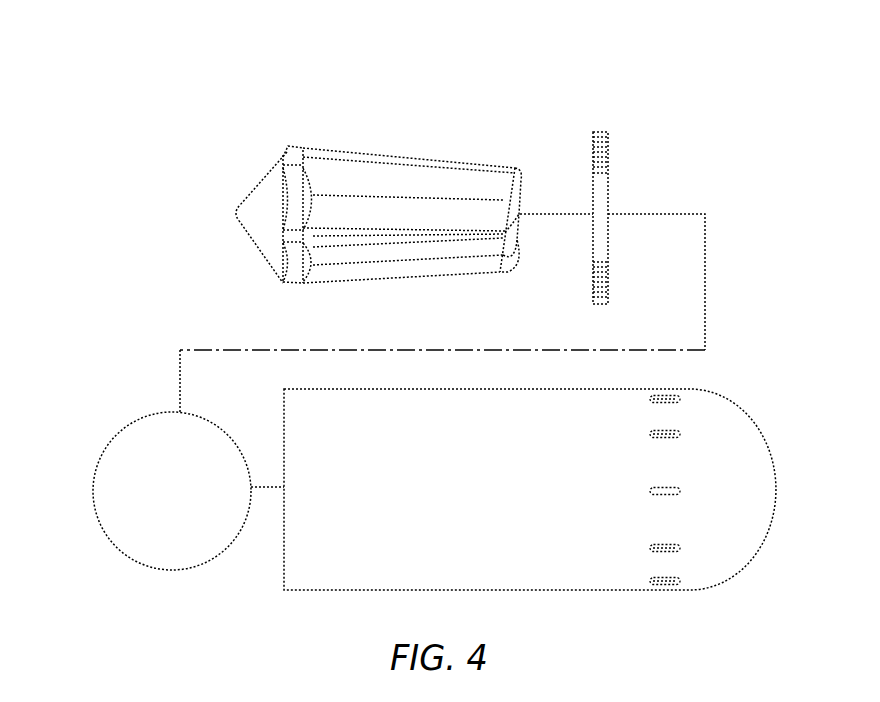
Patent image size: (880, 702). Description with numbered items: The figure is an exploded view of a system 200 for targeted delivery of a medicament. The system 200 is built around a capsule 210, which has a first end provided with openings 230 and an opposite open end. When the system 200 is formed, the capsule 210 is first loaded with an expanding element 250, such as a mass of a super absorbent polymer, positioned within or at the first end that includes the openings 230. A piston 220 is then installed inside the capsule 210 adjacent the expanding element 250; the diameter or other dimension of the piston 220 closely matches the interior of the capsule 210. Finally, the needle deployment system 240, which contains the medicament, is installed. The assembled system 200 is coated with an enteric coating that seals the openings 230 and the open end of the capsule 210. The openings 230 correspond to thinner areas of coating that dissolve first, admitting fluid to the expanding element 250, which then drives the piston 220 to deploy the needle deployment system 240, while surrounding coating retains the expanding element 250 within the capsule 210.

The system 200 is at (157, 92).
The capsule 210 is at (693, 590).
The piston 220 is at (608, 147).
The openings 230 is at (655, 431).
The needle deployment system 240 is at (238, 226).
The expanding element 250 is at (157, 570).